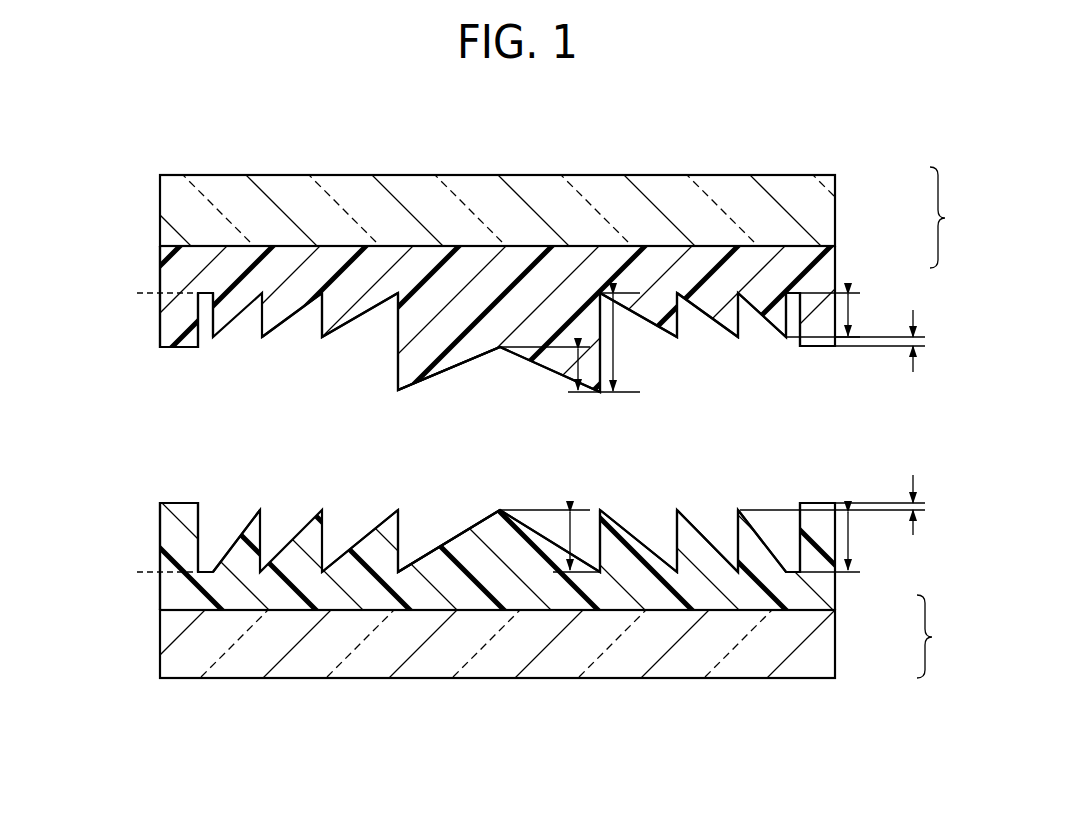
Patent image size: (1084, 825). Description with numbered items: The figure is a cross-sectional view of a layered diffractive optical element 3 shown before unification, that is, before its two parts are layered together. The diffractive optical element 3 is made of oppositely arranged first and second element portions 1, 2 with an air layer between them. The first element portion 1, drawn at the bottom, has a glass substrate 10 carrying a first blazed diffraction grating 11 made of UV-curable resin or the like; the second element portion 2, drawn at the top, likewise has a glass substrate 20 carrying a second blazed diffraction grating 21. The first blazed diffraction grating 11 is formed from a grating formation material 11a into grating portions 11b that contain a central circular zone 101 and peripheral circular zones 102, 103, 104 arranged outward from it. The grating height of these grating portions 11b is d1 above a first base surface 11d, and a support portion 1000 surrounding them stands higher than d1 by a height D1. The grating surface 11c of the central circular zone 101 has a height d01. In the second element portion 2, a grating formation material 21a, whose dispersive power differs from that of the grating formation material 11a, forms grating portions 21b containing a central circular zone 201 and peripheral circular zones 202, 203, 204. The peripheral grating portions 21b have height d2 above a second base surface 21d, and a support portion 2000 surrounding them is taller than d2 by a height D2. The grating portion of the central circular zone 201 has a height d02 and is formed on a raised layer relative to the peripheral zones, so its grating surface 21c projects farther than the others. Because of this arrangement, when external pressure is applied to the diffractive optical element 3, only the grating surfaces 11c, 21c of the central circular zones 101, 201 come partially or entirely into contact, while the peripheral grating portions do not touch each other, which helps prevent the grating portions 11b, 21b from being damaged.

The first element portion 1 is at (932, 636).
The second element portion 2 is at (946, 217).
The layered diffractive optical element 3 is at (805, 105).
The glass substrate 10 is at (812, 647).
The first blazed diffraction grating 11 is at (812, 597).
The grating formation material 11a is at (215, 588).
The grating portions 11b is at (378, 555).
The grating surface 11c is at (453, 537).
The first base surface 11d is at (137, 573).
The glass substrate 20 is at (827, 184).
The second blazed diffraction grating 21 is at (835, 250).
The grating formation material 21a is at (210, 277).
The grating portions 21b is at (287, 300).
The grating surface 21c is at (443, 372).
The second base surface 21d is at (137, 294).
The central circular zone 101 is at (483, 527).
The peripheral circular zone 102 is at (617, 537).
The peripheral circular zone 103 is at (687, 537).
The peripheral circular zone 104 is at (747, 540).
The central circular zone 201 is at (489, 350).
The peripheral circular zone 202 is at (342, 312).
The peripheral circular zone 203 is at (745, 302).
The peripheral circular zone 204 is at (778, 342).
The support portion 1000 is at (165, 537).
The support portion 2000 is at (172, 327).
The height of grating portion of central circular zone d01 is at (580, 538).
The grating height d1 is at (844, 542).
The height difference D1 is at (848, 505).
The height of grating portion of central circular zone d02 is at (575, 375).
The grating height d2 is at (837, 315).
The height difference D2 is at (898, 341).